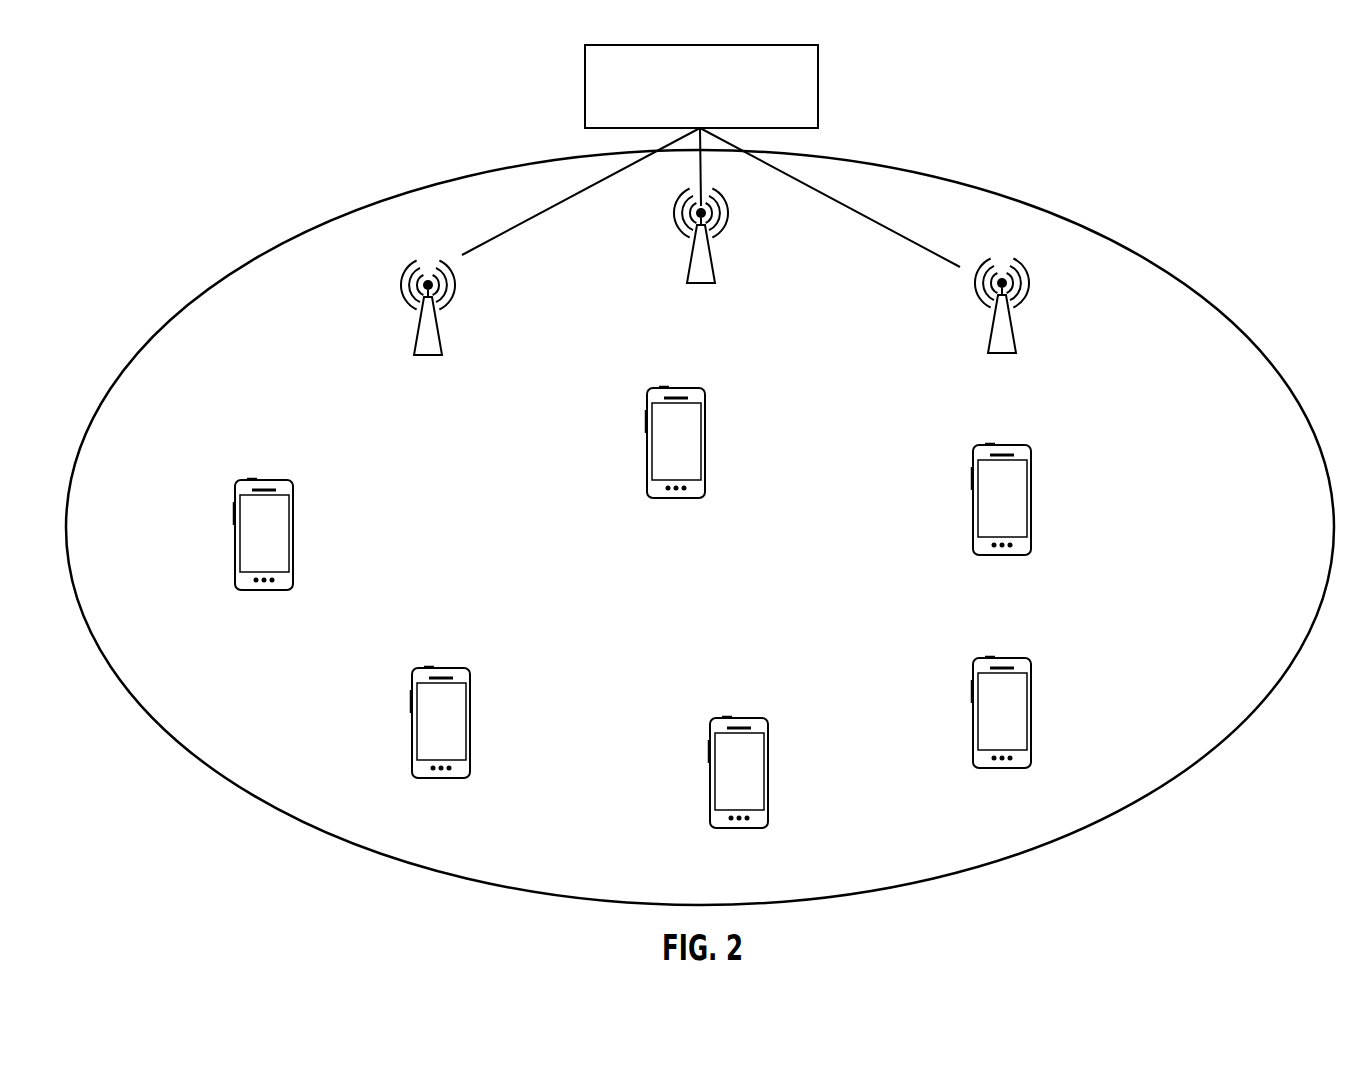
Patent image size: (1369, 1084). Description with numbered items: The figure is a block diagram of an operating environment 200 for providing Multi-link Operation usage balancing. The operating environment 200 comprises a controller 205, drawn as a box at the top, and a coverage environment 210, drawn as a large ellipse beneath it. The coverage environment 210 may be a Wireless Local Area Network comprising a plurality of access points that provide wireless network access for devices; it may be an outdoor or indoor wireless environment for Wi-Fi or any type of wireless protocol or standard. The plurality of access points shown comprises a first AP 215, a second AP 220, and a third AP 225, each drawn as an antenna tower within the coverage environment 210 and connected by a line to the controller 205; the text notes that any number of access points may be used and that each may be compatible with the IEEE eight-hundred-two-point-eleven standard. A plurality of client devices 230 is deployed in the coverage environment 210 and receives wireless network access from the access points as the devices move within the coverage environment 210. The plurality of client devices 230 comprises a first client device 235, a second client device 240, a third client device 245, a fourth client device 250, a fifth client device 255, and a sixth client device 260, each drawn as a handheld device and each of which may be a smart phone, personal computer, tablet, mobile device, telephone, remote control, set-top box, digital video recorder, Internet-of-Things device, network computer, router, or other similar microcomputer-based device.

The operating environment 200 is at (368, 97).
The controller 205 is at (818, 87).
The coverage environment 210 is at (1143, 253).
The first AP 215 is at (712, 258).
The second AP 220 is at (440, 325).
The third AP 225 is at (1013, 327).
The plurality of client devices 230 is at (1183, 459).
The first client device 235 is at (973, 498).
The second client device 240 is at (647, 463).
The third client device 245 is at (235, 543).
The fourth client device 250 is at (412, 722).
The fifth client device 255 is at (710, 775).
The sixth client device 260 is at (973, 713).